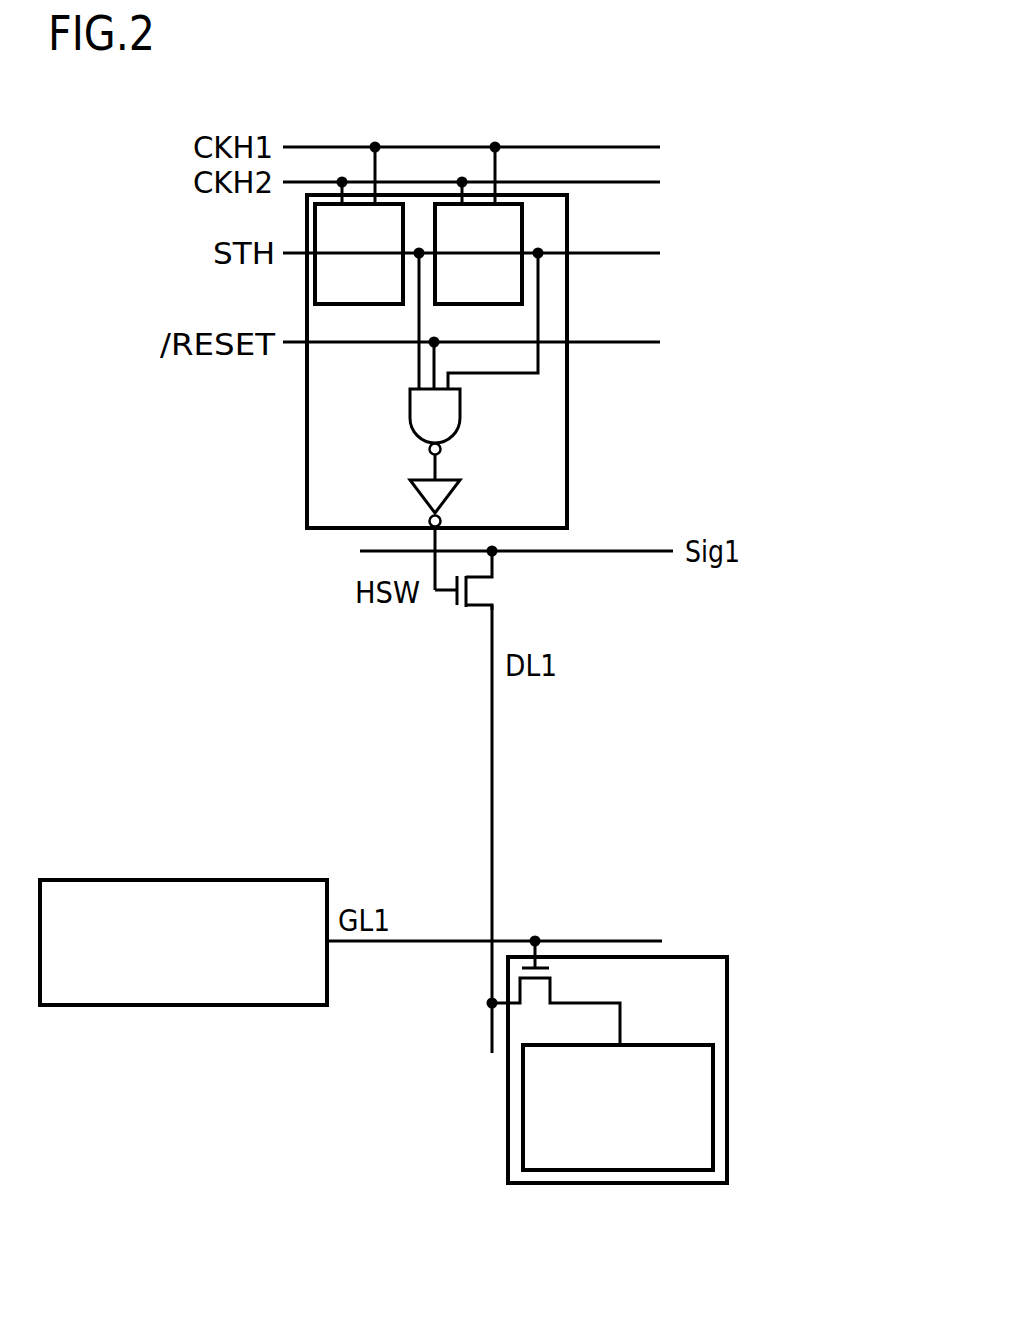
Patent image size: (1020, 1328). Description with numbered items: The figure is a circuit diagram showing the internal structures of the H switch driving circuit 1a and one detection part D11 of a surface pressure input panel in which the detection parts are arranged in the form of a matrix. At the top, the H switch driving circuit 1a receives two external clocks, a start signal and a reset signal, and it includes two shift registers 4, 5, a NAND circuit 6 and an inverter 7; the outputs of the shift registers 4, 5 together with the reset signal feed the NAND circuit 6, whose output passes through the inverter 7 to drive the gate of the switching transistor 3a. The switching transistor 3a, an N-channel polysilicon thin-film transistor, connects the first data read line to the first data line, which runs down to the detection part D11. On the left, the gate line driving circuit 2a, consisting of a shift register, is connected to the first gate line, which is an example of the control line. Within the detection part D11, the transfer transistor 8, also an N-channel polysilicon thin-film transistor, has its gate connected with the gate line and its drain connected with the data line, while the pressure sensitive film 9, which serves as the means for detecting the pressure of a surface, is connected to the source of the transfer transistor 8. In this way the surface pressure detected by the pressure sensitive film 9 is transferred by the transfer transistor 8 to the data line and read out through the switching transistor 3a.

The H switch driving circuit 1a is at (567, 216).
The shift register 4 is at (390, 202).
The shift register 5 is at (510, 202).
The NAND circuit 6 is at (410, 406).
The inverter 7 is at (460, 495).
The switching transistor 3a is at (475, 591).
The gate line driving circuit 2a is at (73, 880).
The transfer transistor 8 is at (555, 975).
The detection part D11 is at (727, 984).
The pressure sensitive film 9 is at (713, 1073).